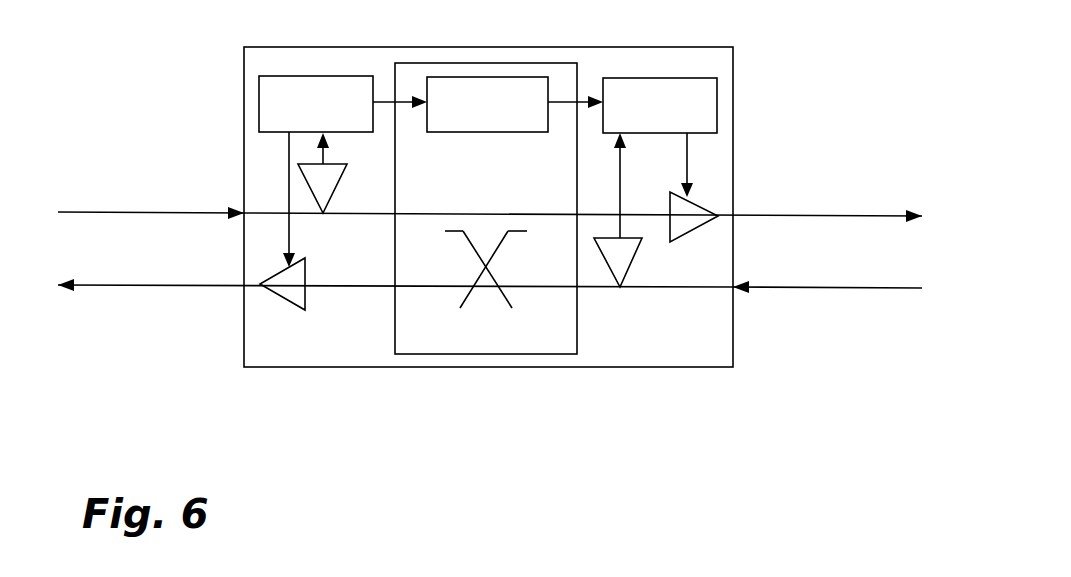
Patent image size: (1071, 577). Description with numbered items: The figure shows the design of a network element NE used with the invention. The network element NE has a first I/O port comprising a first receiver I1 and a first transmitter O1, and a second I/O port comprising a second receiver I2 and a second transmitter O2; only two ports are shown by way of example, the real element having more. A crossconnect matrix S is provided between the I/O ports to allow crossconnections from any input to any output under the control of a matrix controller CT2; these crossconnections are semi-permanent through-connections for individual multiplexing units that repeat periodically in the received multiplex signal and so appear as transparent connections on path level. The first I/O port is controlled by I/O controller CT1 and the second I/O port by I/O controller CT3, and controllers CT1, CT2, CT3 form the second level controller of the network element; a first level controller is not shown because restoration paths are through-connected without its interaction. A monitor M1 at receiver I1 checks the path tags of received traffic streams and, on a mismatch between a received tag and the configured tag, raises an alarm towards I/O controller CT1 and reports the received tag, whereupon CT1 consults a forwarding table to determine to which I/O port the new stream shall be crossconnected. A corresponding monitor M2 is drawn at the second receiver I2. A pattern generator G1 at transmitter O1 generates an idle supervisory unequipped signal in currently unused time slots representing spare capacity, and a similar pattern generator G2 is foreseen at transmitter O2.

The network element NE is at (748, 451).
The I/O controller CT1 is at (316, 104).
The matrix controller CT2 is at (487, 104).
The I/O controller CT3 is at (660, 105).
The first receiver I1 is at (176, 199).
The second receiver I2 is at (810, 273).
The first transmitter O1 is at (167, 270).
The second transmitter O2 is at (801, 177).
The pattern generator G1 is at (300, 301).
The pattern generator G2 is at (729, 211).
The monitor M1 is at (337, 191).
The monitor M2 is at (639, 231).
The crossconnect matrix S is at (486, 241).